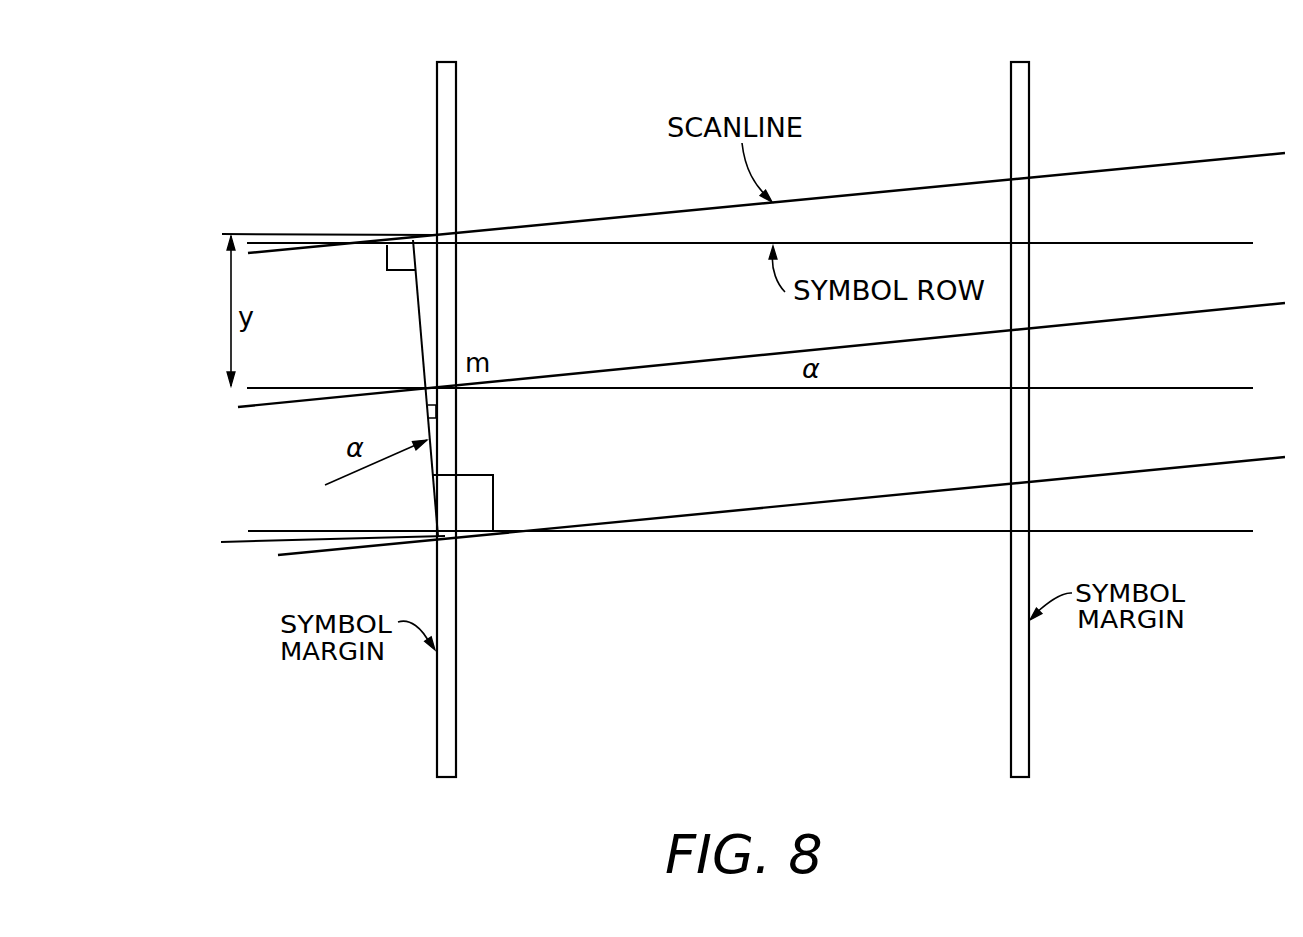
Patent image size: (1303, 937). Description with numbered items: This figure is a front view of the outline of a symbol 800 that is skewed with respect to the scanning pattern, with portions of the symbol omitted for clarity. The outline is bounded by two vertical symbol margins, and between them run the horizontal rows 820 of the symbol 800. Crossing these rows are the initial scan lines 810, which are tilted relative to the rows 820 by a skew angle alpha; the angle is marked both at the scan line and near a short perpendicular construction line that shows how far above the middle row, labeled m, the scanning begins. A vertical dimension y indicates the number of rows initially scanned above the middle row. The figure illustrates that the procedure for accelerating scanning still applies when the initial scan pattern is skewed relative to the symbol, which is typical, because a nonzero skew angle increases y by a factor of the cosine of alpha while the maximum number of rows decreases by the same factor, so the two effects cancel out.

The symbol 800 is at (894, 108).
The initial scan lines 810 is at (1177, 163).
The rows 820 is at (933, 532).